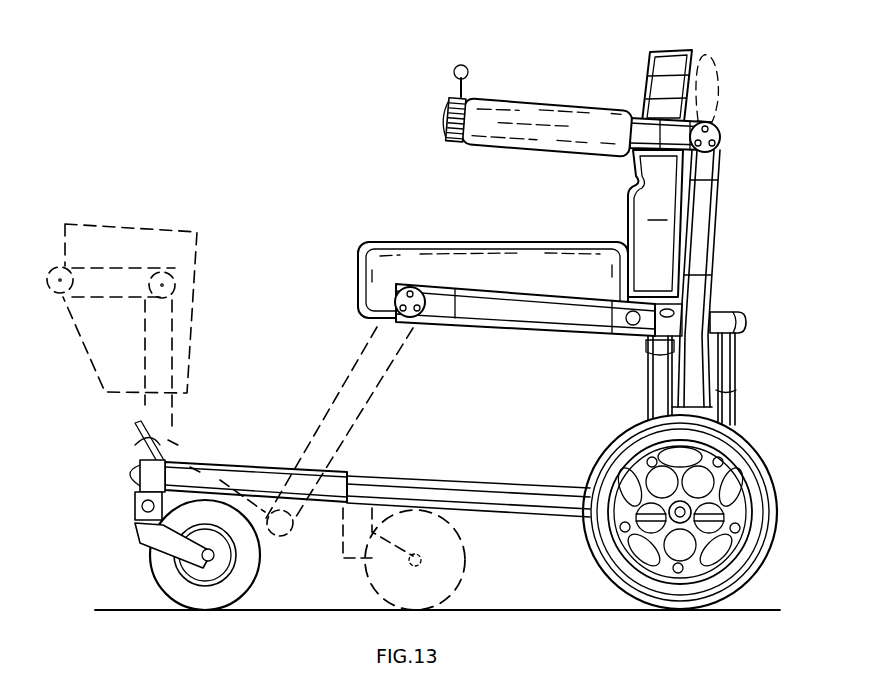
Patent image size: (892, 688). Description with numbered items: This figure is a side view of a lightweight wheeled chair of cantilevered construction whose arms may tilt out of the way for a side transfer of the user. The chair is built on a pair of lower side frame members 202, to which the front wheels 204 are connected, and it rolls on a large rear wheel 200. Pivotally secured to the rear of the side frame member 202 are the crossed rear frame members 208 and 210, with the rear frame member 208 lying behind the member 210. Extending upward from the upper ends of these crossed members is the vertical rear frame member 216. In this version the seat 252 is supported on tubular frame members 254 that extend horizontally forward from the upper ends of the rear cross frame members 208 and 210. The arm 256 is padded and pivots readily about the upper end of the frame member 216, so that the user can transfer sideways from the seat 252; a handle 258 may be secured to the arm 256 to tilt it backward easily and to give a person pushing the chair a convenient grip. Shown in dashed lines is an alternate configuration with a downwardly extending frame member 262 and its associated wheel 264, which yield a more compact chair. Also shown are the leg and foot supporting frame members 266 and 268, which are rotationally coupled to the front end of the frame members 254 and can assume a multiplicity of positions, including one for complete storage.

The rear wheel 200 is at (752, 565).
The lower side frame member 202 is at (440, 478).
The front wheel 204 is at (250, 575).
The rear frame member 208 is at (725, 372).
The rear frame member 210 is at (650, 372).
The vertical rear frame member 216 is at (718, 212).
The seat 252 is at (512, 283).
The tubular frame member 254 is at (535, 312).
The arm 256 is at (568, 80).
The handle 258 is at (720, 84).
The downwardly extending frame member 262 is at (345, 536).
The wheel 264 is at (466, 560).
The leg and foot supporting frame member 266 is at (357, 365).
The leg and foot supporting frame member 268 is at (272, 446).